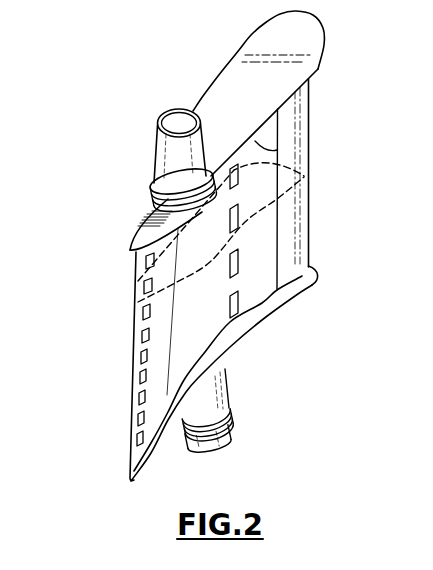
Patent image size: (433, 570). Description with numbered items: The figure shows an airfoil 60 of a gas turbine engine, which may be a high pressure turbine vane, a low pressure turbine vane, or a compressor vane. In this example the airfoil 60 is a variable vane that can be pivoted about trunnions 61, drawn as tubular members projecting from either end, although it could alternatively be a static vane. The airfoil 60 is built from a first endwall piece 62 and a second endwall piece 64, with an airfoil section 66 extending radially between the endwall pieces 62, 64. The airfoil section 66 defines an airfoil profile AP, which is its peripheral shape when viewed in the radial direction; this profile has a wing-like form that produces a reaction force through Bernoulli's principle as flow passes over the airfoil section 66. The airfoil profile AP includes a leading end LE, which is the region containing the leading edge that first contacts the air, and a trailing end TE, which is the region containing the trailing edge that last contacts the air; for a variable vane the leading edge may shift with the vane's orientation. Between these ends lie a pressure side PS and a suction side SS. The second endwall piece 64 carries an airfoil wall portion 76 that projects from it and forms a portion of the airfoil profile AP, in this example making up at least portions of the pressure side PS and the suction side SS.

The airfoil 60 is at (72, 447).
The trunnions 61 is at (154, 145).
The first endwall piece 62 is at (276, 306).
The second endwall piece 64 is at (316, 45).
The airfoil section 66 is at (309, 171).
The airfoil wall portion 76 is at (295, 141).
The suction side SS is at (252, 156).
The pressure side PS is at (266, 228).
The leading end LE is at (311, 228).
The trailing end TE is at (133, 368).
The airfoil profile AP is at (152, 291).